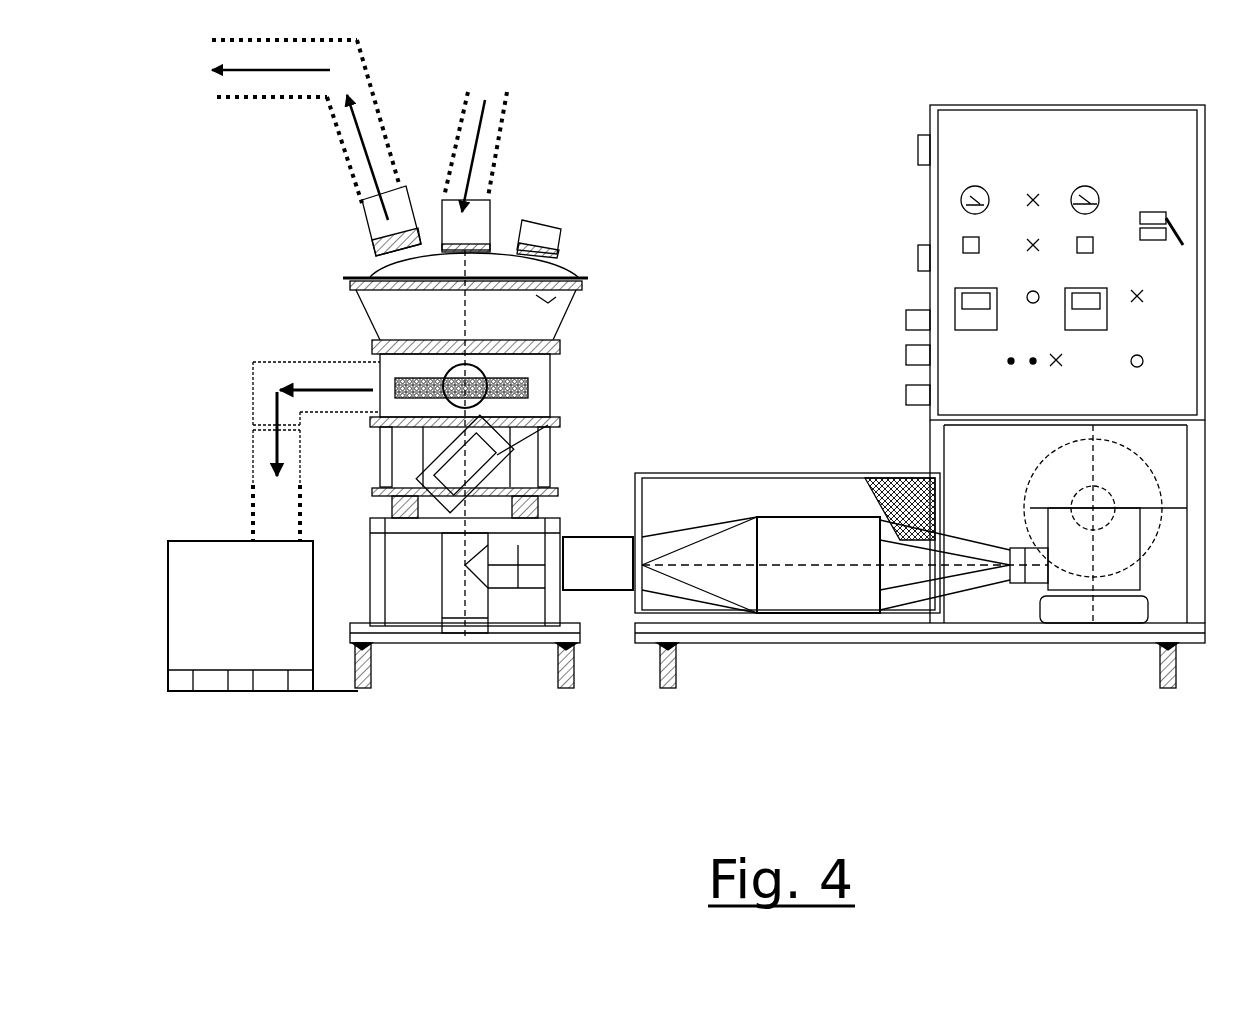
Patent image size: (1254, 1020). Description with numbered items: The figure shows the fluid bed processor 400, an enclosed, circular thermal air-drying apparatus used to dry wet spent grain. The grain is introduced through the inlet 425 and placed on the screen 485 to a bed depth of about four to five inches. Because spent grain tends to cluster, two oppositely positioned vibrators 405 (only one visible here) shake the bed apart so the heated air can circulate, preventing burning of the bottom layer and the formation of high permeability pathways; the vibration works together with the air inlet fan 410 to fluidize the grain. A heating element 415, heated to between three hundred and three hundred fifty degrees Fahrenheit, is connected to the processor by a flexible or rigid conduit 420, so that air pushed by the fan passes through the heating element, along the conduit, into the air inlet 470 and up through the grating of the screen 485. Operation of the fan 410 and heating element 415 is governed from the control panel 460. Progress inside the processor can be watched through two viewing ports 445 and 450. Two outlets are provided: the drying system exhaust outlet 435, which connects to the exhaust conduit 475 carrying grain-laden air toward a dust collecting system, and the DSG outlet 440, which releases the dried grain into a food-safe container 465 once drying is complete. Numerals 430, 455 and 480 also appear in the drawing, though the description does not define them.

The fluid bed processor 400 is at (588, 283).
The vibrator 405 is at (392, 494).
The air inlet fan 410 is at (1038, 475).
The heating element 415 is at (757, 517).
The conduit 420 is at (598, 592).
The inlet 425 is at (495, 218).
The feed material flow 430 is at (460, 120).
The drying system exhaust outlet 435 is at (368, 232).
The DSG outlet 440 is at (251, 380).
The viewing port 445 is at (553, 228).
The viewing port 450 is at (486, 378).
The base frame 455 is at (470, 643).
The control panel 460 is at (1058, 105).
The food-safe container 465 is at (258, 605).
The air inlet 470 is at (455, 543).
The exhaust conduit 475 is at (233, 100).
The rotor assembly 480 is at (543, 507).
The screen 485 is at (400, 388).